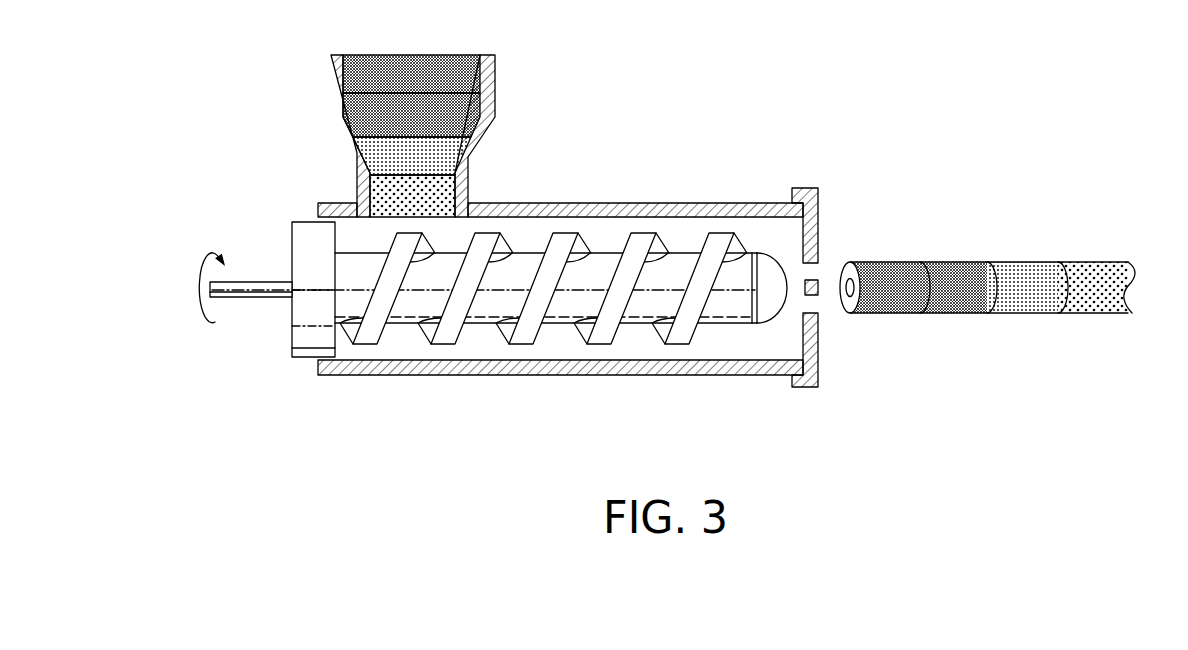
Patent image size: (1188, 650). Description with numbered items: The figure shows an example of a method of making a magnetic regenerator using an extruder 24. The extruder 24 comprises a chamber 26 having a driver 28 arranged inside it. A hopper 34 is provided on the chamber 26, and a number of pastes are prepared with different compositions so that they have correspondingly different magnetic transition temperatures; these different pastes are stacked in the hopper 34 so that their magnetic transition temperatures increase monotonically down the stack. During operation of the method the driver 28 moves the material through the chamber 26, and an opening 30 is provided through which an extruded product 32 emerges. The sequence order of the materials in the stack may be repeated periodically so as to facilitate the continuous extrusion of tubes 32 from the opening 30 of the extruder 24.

The extruder 24 is at (537, 440).
The chamber 26 is at (606, 232).
The driver 28 is at (405, 310).
The opening 30 is at (821, 266).
The extruded product 32 is at (1012, 315).
The hopper 34 is at (497, 74).